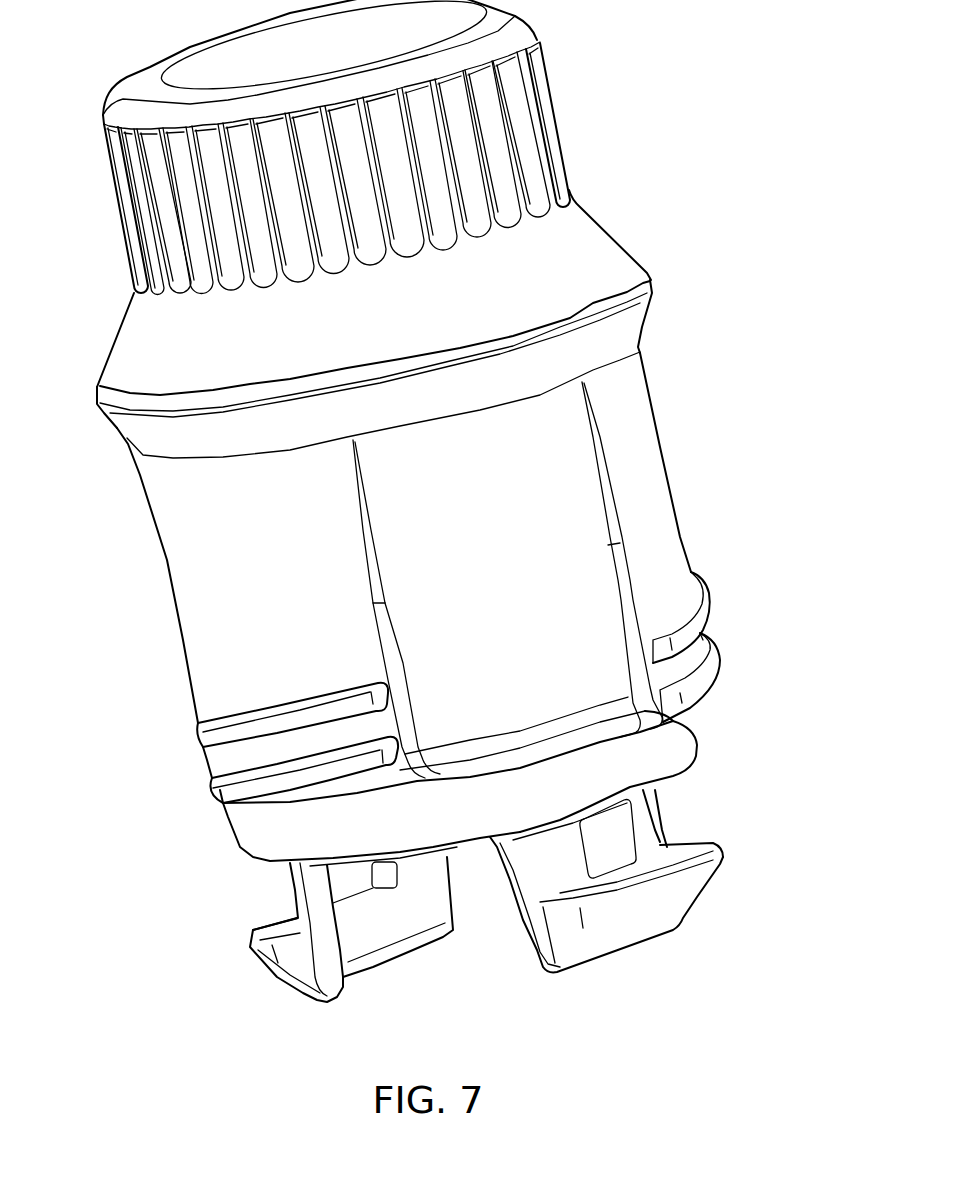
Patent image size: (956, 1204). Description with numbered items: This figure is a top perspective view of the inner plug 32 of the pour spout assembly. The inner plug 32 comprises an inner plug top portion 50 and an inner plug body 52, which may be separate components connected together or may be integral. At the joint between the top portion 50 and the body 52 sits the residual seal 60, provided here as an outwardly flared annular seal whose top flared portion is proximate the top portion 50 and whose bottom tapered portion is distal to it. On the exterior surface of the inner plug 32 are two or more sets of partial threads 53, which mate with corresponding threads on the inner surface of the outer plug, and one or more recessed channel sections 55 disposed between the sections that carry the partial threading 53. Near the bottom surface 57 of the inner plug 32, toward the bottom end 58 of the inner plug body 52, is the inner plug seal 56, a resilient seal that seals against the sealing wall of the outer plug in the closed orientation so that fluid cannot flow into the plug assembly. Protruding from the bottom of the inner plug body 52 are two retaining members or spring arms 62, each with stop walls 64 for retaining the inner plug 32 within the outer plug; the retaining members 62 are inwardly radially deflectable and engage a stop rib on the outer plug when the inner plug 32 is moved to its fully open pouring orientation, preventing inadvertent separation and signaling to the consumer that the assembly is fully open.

The inner plug 32 is at (707, 103).
The inner plug top portion 50 is at (107, 150).
The inner plug body 52 is at (187, 593).
The partial threads 53 is at (197, 733).
The channel section 55 is at (507, 691).
The inner plug seal 56 is at (240, 833).
The bottom surface 57 is at (683, 770).
The bottom end 58 is at (227, 760).
The residual seal 60 is at (138, 428).
The retaining members 62 is at (297, 990).
The stop walls 64 is at (257, 931).